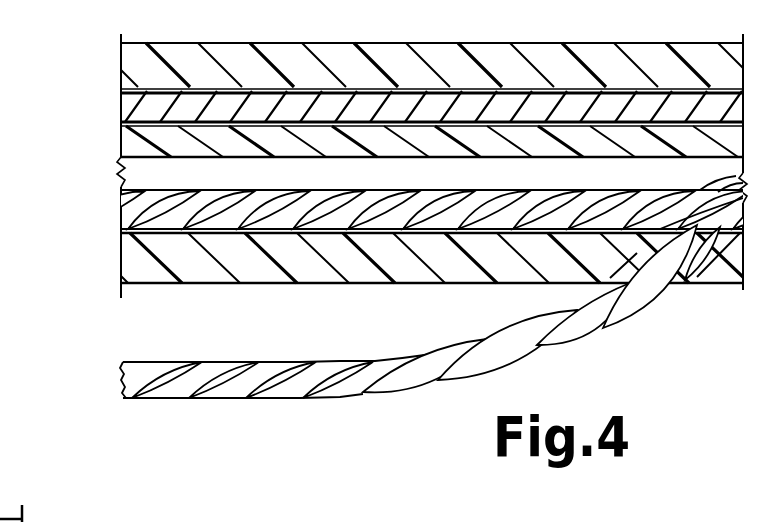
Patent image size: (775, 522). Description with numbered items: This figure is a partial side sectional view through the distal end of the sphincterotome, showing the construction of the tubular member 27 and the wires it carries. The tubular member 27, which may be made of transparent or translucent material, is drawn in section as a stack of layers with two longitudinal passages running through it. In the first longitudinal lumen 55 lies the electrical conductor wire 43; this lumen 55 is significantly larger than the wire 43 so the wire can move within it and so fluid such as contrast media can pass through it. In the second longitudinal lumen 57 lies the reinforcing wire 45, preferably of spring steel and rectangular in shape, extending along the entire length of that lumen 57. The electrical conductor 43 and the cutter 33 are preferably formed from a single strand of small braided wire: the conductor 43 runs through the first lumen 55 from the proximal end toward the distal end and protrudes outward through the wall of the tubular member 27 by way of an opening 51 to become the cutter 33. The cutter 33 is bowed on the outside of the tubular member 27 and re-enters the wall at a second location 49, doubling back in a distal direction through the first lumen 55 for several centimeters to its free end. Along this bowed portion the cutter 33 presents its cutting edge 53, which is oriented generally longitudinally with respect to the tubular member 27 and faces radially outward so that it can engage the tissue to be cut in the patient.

The tubular member 27 is at (282, 80).
The cutter 33 is at (423, 342).
The electrical conductor wire 43 is at (718, 181).
The reinforcing wire 45 is at (619, 88).
The second location 49 is at (678, 315).
The opening 51 is at (685, 292).
The cutting edge 53 is at (300, 400).
The first longitudinal lumen 55 is at (403, 215).
The second longitudinal lumen 57 is at (120, 110).